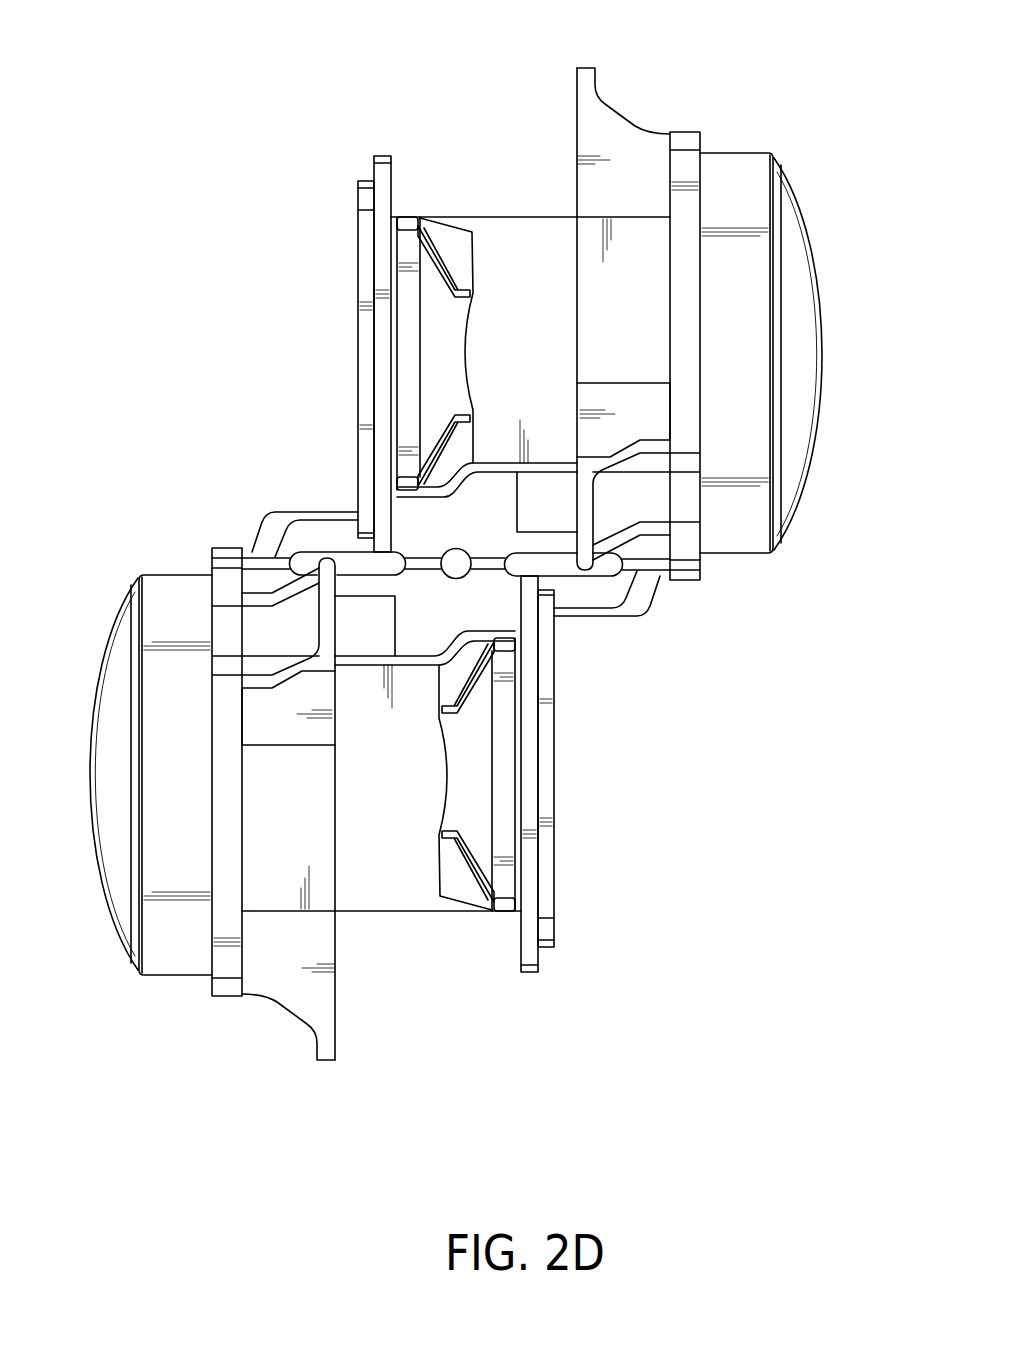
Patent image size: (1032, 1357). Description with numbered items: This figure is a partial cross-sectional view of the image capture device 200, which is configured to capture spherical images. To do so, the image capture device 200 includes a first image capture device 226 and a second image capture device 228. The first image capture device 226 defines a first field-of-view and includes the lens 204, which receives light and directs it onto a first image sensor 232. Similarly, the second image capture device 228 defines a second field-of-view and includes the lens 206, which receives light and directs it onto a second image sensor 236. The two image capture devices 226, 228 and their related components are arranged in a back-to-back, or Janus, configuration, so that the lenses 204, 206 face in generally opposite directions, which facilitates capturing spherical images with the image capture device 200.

The image capture device 200 is at (340, 139).
The lens 204 is at (112, 736).
The lens 206 is at (800, 313).
The first image capture device 226 is at (224, 1033).
The second image capture device 228 is at (755, 84).
The first image sensor 232 is at (540, 780).
The second image sensor 236 is at (372, 350).